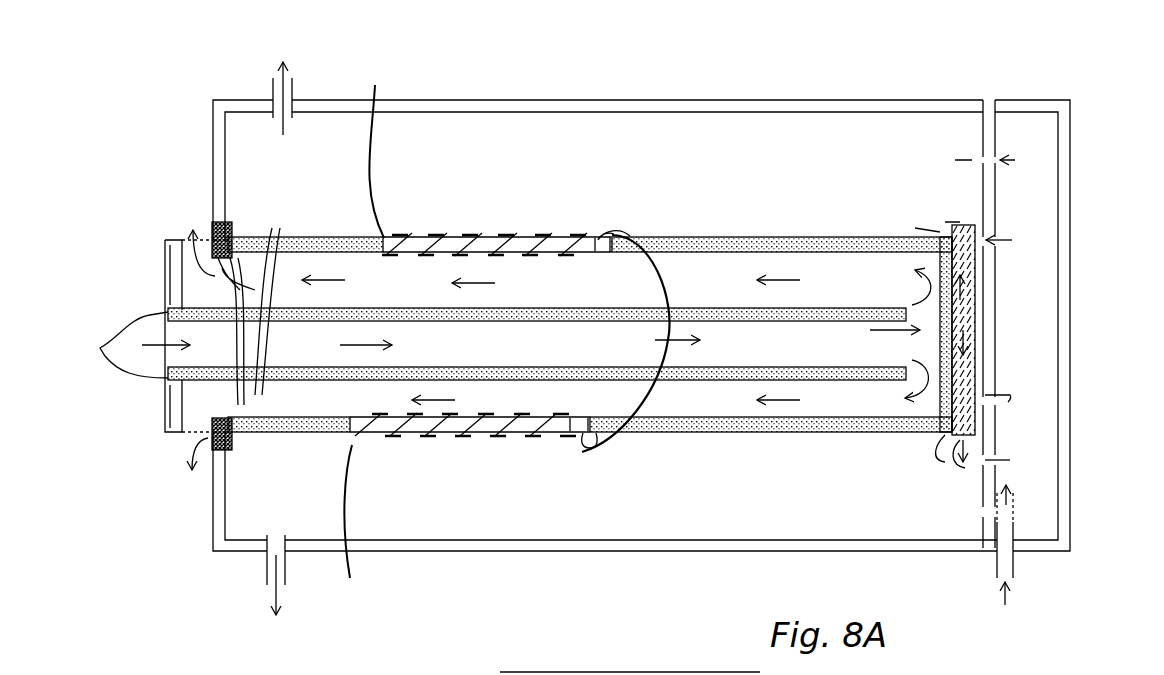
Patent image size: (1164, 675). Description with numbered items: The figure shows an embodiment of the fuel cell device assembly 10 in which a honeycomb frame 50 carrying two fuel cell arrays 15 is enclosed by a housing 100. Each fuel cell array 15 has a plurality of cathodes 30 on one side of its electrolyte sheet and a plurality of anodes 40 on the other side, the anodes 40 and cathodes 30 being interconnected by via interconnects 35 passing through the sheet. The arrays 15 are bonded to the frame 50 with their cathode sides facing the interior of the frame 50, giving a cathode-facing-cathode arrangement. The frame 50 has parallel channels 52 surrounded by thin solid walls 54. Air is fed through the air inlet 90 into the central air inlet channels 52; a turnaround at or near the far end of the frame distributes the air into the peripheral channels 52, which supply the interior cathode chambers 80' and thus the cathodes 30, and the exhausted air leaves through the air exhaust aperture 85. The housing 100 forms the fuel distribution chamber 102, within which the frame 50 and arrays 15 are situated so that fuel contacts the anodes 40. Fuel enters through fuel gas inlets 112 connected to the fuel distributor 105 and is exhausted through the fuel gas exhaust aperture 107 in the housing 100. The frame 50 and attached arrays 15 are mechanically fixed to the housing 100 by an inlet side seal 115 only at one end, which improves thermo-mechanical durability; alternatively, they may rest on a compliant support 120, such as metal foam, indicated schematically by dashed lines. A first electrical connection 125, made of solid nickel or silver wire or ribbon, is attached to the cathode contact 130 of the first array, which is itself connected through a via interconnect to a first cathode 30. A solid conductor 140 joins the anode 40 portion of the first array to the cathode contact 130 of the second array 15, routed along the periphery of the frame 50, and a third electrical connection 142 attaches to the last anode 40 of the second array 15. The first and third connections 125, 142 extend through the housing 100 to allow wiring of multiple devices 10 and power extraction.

The fuel cell device assembly 10 is at (1108, 84).
The fuel cell array 15 is at (602, 252).
The cathode 30 is at (563, 254).
The via interconnect 35 is at (412, 237).
The anode 40 is at (572, 236).
The frame 50 is at (715, 237).
The channel 52 is at (220, 243).
The solid wall 54 is at (268, 330).
The interior cathode chamber 80' is at (536, 340).
The air exhaust aperture 85 is at (210, 258).
The air inlet 90 is at (132, 326).
The housing 100 is at (462, 548).
The fuel distribution chamber 102 is at (573, 510).
The fuel distributor 105 is at (1035, 402).
The fuel gas exhaust aperture 107 is at (292, 122).
The fuel gas inlet 112 is at (990, 400).
The seal 115 is at (233, 238).
The compliant support 120 is at (968, 445).
The first electrical connection 125 is at (355, 505).
The cathode contact 130 is at (625, 232).
The solid conductor 140 is at (635, 440).
The third electrical connection 142 is at (385, 165).